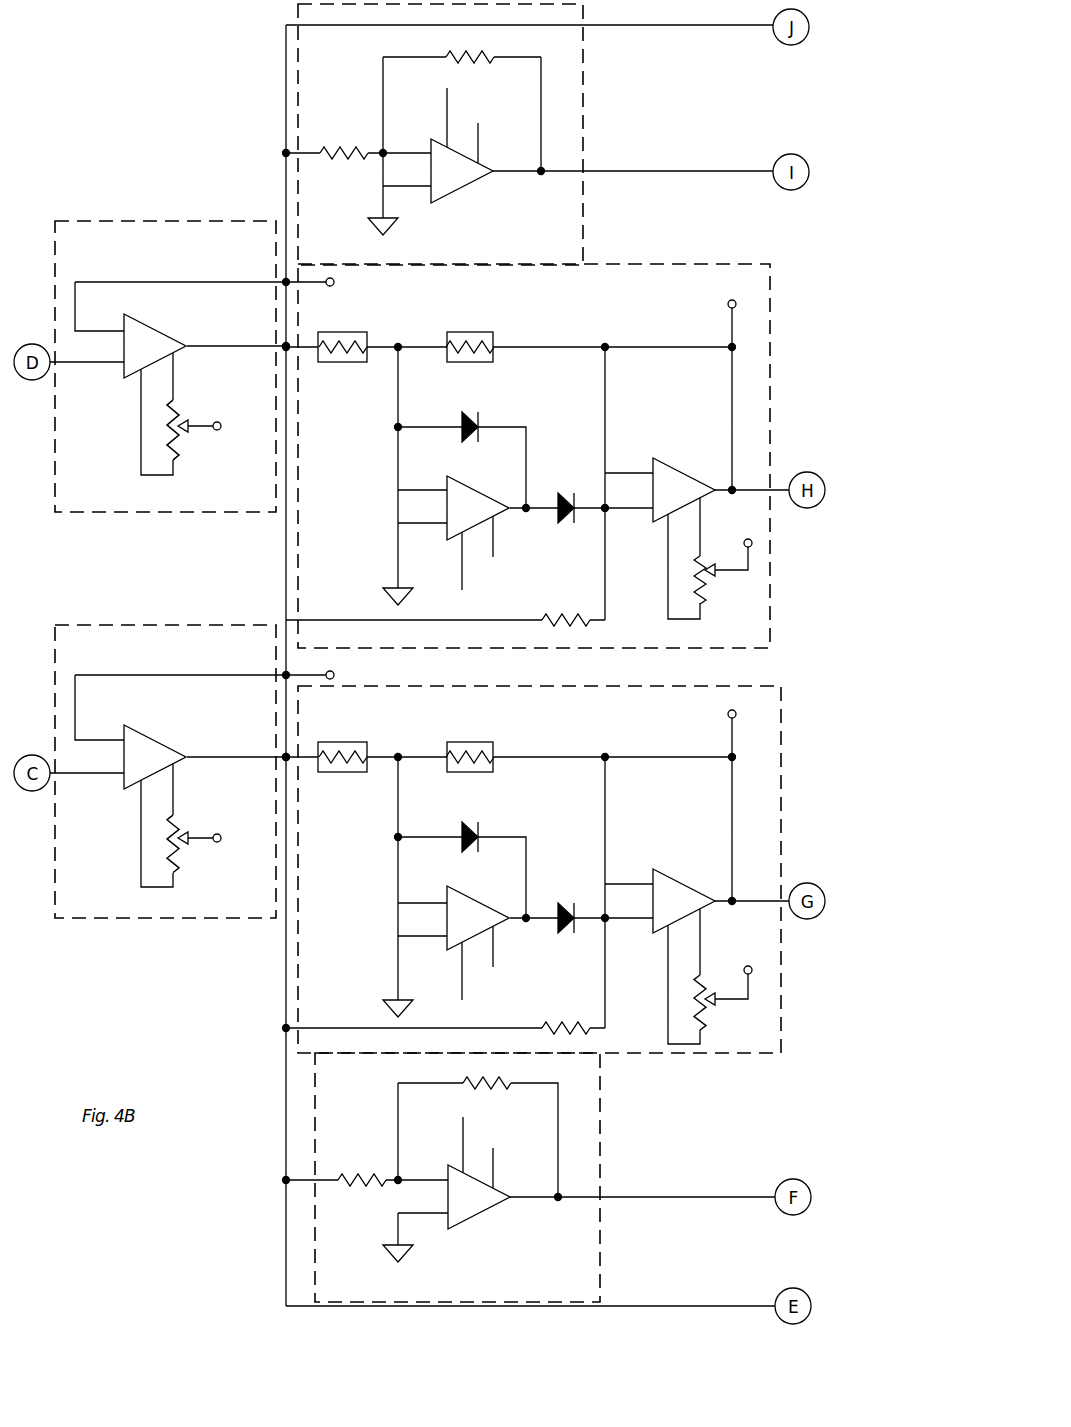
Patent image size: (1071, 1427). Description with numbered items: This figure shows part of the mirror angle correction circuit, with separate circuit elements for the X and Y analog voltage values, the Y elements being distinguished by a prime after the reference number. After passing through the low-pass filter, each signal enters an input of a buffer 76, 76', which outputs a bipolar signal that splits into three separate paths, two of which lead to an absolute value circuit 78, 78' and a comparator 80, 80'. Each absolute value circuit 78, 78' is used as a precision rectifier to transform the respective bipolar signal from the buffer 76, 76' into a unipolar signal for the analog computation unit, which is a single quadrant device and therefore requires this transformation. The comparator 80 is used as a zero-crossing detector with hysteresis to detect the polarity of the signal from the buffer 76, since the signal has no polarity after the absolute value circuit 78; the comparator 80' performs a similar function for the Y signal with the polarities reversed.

The buffer 76' is at (206, 331).
The absolute value circuit 78' is at (536, 429).
The comparator 80' is at (500, 134).
The buffer 76 is at (209, 797).
The absolute value circuit 78 is at (542, 903).
The comparator 80 is at (529, 1177).